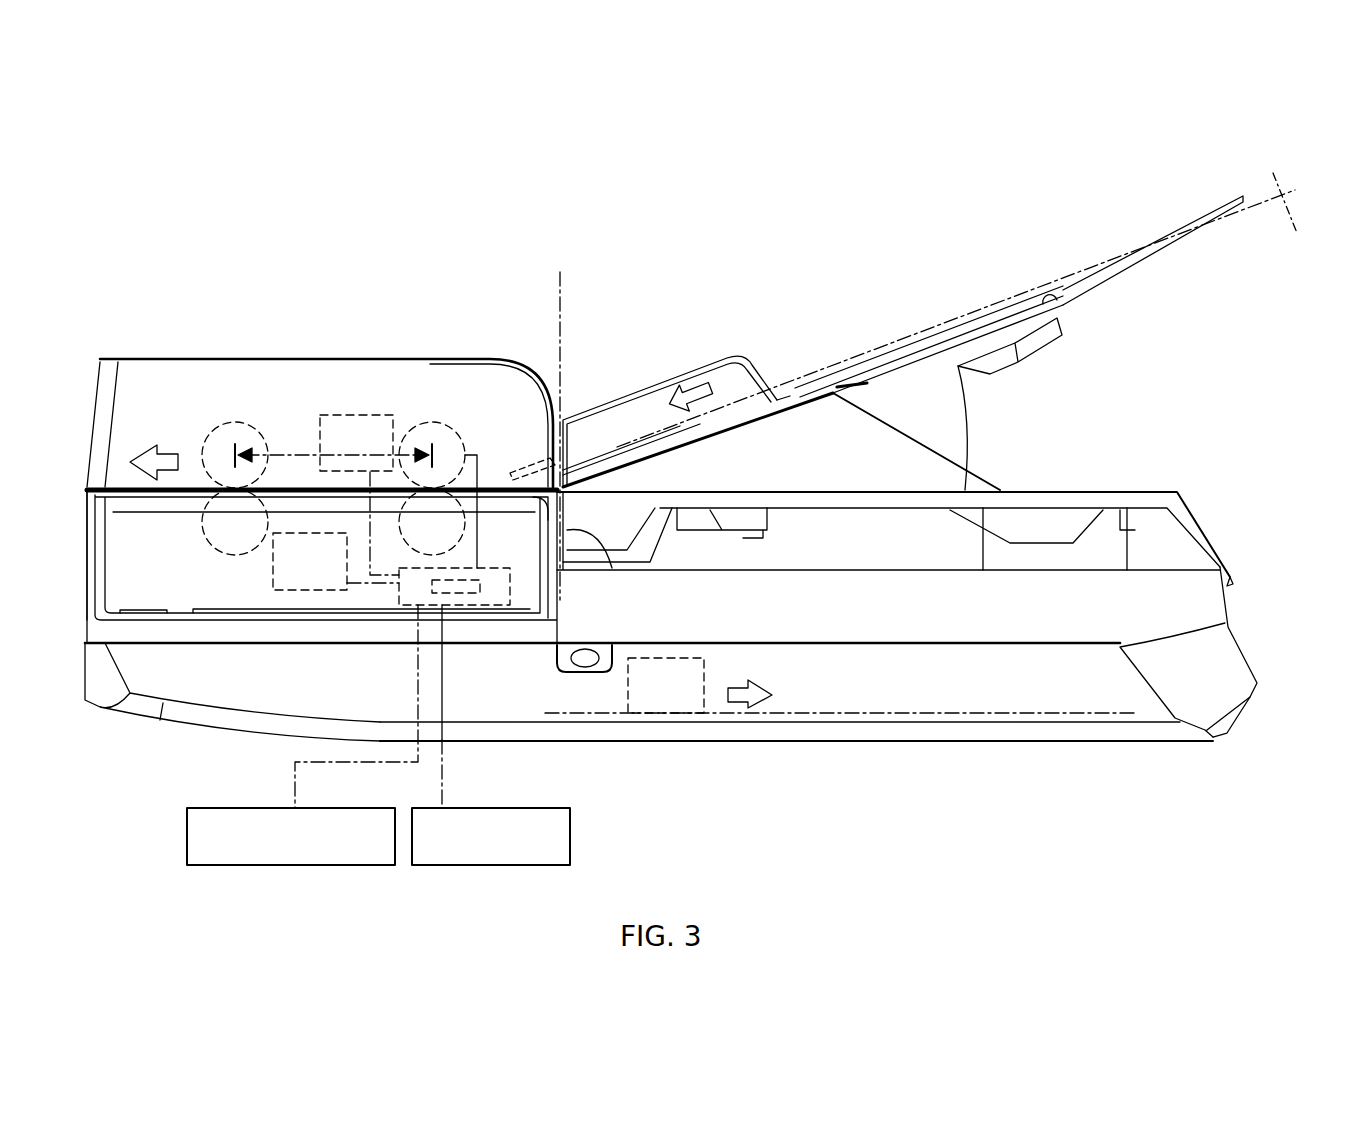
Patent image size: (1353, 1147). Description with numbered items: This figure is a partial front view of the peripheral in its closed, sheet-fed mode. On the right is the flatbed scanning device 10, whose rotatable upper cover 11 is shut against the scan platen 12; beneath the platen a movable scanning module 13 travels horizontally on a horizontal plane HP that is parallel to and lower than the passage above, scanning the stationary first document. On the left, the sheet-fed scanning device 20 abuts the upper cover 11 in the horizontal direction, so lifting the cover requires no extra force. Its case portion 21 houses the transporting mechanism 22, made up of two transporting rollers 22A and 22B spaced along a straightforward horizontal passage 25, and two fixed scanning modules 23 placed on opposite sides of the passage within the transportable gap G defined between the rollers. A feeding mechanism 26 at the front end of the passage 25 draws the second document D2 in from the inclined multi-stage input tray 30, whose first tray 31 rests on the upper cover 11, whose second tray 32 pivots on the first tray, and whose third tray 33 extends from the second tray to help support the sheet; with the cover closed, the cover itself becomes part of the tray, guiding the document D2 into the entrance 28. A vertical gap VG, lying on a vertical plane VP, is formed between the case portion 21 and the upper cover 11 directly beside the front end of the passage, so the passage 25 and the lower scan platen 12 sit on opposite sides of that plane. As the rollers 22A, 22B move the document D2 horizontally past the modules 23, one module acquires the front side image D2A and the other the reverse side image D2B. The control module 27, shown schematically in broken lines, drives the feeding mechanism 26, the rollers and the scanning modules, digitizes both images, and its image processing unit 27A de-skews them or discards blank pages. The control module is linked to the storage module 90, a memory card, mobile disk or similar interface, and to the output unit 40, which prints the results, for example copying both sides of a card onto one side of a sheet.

The flatbed scanning device 10 is at (1238, 564).
The upper cover 11 is at (1057, 492).
The scan platen 12 is at (1040, 572).
The movable scanning module 13 is at (665, 707).
The sheet-fed scanning device 20 is at (266, 348).
The case portion 21 is at (490, 358).
The transporting mechanism 22 is at (640, 118).
The transporting roller 22A is at (443, 422).
The transporting roller 22B is at (228, 423).
The fixed scanning module 23 is at (357, 415).
The horizontal passage 25 is at (280, 533).
The feeding mechanism 26 is at (528, 520).
The control module 27 is at (377, 605).
The image processing unit 27A is at (466, 595).
The entrance 28 is at (562, 478).
The multi-stage input tray 30 is at (358, 113).
The first tray 31 is at (800, 423).
The second tray 32 is at (933, 355).
The third tray 33 is at (1150, 250).
The output unit 40 is at (500, 811).
The storage module 90 is at (220, 811).
The transportable gap G is at (380, 375).
The vertical plane VP is at (572, 282).
The vertical gap VG is at (598, 532).
The horizontal plane HP is at (828, 718).
The second document D2 is at (990, 284).
The front side image D2A is at (1055, 270).
The reverse side image D2B is at (1306, 219).